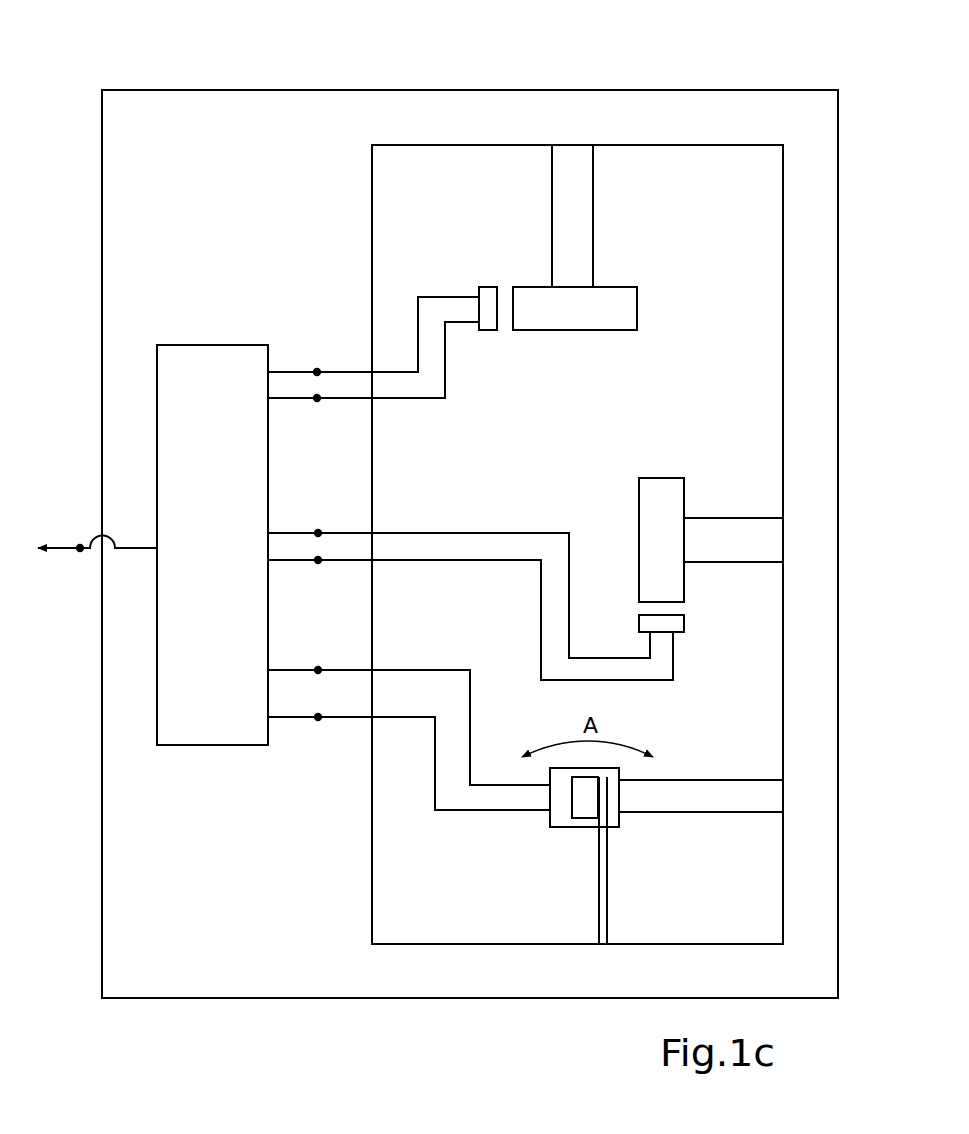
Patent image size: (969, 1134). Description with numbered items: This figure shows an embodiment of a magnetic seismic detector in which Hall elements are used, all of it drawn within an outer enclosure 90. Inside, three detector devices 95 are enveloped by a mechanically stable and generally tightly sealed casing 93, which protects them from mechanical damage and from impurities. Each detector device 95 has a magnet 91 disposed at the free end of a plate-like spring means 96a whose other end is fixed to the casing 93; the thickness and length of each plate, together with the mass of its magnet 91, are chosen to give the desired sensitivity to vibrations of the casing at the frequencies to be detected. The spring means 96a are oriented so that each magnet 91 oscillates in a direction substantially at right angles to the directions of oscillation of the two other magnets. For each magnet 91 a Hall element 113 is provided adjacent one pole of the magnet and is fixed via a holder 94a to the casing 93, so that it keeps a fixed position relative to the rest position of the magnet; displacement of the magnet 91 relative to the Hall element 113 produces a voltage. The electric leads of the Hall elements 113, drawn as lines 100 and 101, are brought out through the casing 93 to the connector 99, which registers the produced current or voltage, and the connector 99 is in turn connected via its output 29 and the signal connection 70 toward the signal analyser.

The housing 90 is at (722, 90).
The casing 93 is at (372, 220).
The connector 99 is at (203, 746).
The signal connection 70 is at (60, 547).
The output 29 is at (80, 552).
The power wire 100 is at (317, 368).
The signal wire 101 is at (317, 402).
The Hall element 113 is at (485, 332).
The magnet 91 is at (637, 292).
The plate-like spring means 96a is at (588, 210).
The holder 94a is at (707, 803).
The detector device 95 is at (523, 253).